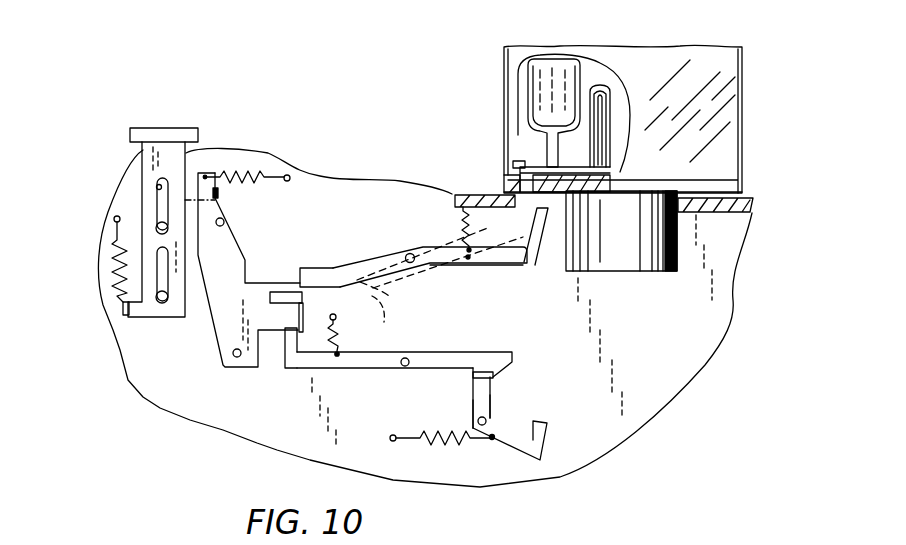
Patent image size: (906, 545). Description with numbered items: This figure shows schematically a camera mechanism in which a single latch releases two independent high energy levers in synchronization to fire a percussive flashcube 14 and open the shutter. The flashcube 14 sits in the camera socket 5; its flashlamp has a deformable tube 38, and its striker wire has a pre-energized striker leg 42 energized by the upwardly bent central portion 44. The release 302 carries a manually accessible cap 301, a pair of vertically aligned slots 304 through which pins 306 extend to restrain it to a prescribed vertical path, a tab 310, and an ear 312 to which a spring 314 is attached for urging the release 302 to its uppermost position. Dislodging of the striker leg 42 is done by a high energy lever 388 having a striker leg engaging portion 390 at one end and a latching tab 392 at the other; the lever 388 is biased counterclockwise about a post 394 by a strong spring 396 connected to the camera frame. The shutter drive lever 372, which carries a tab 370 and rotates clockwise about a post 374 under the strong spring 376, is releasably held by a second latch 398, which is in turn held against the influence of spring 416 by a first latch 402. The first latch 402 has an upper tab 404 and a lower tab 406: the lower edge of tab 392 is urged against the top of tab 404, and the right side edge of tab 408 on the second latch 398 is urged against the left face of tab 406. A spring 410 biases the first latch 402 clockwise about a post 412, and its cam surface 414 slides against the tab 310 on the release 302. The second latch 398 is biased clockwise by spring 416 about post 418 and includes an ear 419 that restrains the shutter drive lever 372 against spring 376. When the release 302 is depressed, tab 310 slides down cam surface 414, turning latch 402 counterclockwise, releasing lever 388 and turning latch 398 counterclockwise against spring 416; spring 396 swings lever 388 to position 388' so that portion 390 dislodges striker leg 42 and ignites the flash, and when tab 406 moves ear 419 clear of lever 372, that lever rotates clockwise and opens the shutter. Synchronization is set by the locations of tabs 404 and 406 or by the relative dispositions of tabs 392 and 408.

The camera socket 5 is at (628, 256).
The percussive flashcube 14 is at (752, 109).
The elongated tube 38 is at (520, 118).
The striker leg 42 is at (538, 164).
The upwardly bent central portion 44 is at (611, 122).
The cap 301 is at (160, 127).
The release 302 is at (180, 166).
The slots 304 is at (156, 186).
The pins 306 is at (157, 225).
The tab 310 is at (226, 194).
The ear 312 is at (126, 310).
The spring 314 is at (111, 246).
The tab 370 is at (476, 378).
The shutter drive lever 372 is at (500, 403).
The post 374 is at (496, 428).
The spring 376 is at (431, 440).
The high energy lever 388 is at (430, 276).
The high energy lever position 388' is at (388, 316).
The striker leg engaging portion 390 is at (540, 238).
The latching tab 392 is at (312, 267).
The post 394 is at (407, 256).
The spring 396 is at (460, 215).
The second latch 398 is at (465, 362).
The first latch 402 is at (226, 252).
The upper tab 404 is at (282, 292).
The lower tab 406 is at (305, 322).
The tab 408 is at (294, 333).
The spring 410 is at (246, 176).
The post 412 is at (236, 358).
The cam surface 414 is at (225, 222).
The spring 416 is at (337, 332).
The post 418 is at (407, 358).
The ear 419 is at (495, 373).